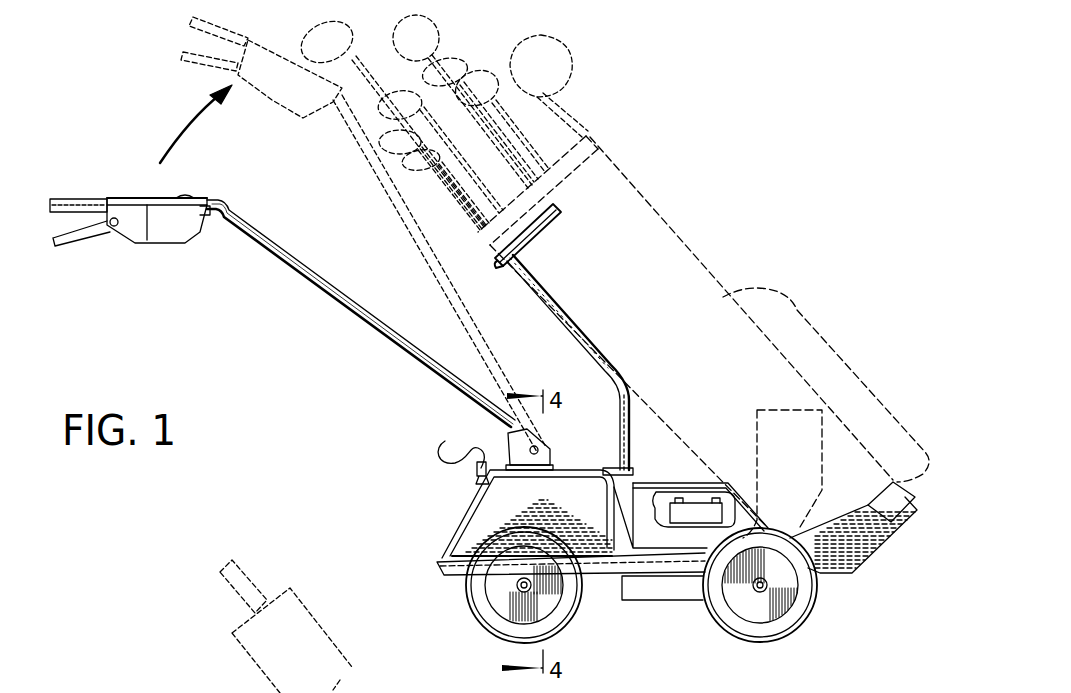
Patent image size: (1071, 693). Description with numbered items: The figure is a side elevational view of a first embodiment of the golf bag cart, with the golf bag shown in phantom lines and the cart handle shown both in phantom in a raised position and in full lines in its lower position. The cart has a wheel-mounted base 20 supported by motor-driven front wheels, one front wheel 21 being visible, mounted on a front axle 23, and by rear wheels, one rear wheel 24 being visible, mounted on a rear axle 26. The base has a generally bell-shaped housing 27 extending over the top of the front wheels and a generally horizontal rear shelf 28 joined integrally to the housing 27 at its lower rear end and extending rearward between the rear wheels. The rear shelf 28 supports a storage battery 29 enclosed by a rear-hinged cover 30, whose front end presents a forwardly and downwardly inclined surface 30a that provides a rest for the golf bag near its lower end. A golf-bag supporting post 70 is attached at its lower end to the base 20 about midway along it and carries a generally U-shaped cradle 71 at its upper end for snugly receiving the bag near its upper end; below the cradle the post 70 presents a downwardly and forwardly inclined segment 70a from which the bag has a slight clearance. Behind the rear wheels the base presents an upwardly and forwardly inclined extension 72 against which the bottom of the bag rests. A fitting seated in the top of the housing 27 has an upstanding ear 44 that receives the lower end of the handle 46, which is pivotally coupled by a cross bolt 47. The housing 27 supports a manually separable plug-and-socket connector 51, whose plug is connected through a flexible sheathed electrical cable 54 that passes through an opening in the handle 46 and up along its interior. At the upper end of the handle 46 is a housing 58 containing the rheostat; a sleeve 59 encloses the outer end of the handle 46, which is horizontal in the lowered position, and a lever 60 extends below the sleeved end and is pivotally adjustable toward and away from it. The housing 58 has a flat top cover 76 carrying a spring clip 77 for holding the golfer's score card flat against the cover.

The wheel-mounted base 20 is at (366, 504).
The front wheel 21 is at (576, 598).
The front axle 23 is at (517, 585).
The rear wheel 24 is at (815, 599).
The rear axle 26 is at (758, 589).
The bell-shaped housing 27 is at (565, 483).
The rear shelf 28 is at (667, 548).
The storage battery 29 is at (693, 500).
The battery cover 30 is at (717, 483).
The inclined surface 30a is at (742, 503).
The upstanding ear 44 is at (528, 442).
The handle 46 is at (371, 327).
The cross bolt 47 is at (534, 455).
The plug-and-socket connector 51 is at (480, 471).
The electrical cable 54 is at (445, 441).
The housing 58 is at (172, 236).
The sleeve 59 is at (68, 198).
The lever 60 is at (78, 233).
The golf-bag supporting post 70 is at (629, 428).
The inclined segment 70a is at (564, 322).
The U-shaped cradle 71 is at (531, 238).
The inclined extension 72 is at (893, 533).
The top cover 76 is at (140, 198).
The spring clip 77 is at (186, 197).